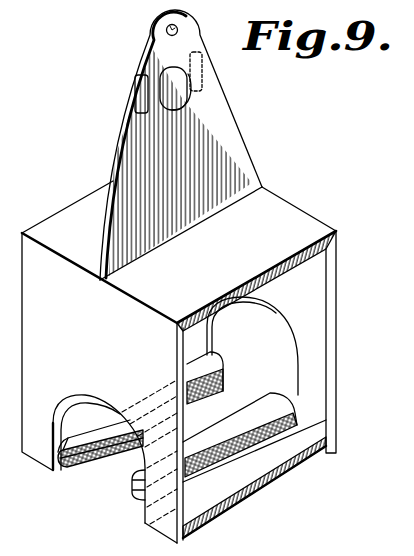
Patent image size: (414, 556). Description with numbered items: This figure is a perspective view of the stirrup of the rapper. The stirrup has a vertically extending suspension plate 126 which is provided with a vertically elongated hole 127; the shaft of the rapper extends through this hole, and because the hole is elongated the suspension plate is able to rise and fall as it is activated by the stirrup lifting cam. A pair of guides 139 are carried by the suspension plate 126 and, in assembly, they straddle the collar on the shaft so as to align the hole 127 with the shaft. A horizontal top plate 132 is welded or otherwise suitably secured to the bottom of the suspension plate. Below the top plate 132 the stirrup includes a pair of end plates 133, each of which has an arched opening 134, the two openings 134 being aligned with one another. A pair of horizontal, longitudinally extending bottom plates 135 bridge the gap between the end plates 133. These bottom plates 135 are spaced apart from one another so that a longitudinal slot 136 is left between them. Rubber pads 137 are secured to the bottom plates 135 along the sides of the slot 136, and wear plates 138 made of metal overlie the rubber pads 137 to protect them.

The suspension plate 126 is at (249, 152).
The vertically elongated hole 127 is at (184, 110).
The horizontal top plate 132 is at (67, 209).
The end plates 133 is at (70, 341).
The arched openings 134 is at (99, 399).
The bottom plates 135 is at (64, 474).
The longitudinal slot 136 is at (212, 423).
The rubber pads 137 is at (133, 487).
The wear plates 138 is at (265, 402).
The guides 139 is at (128, 98).